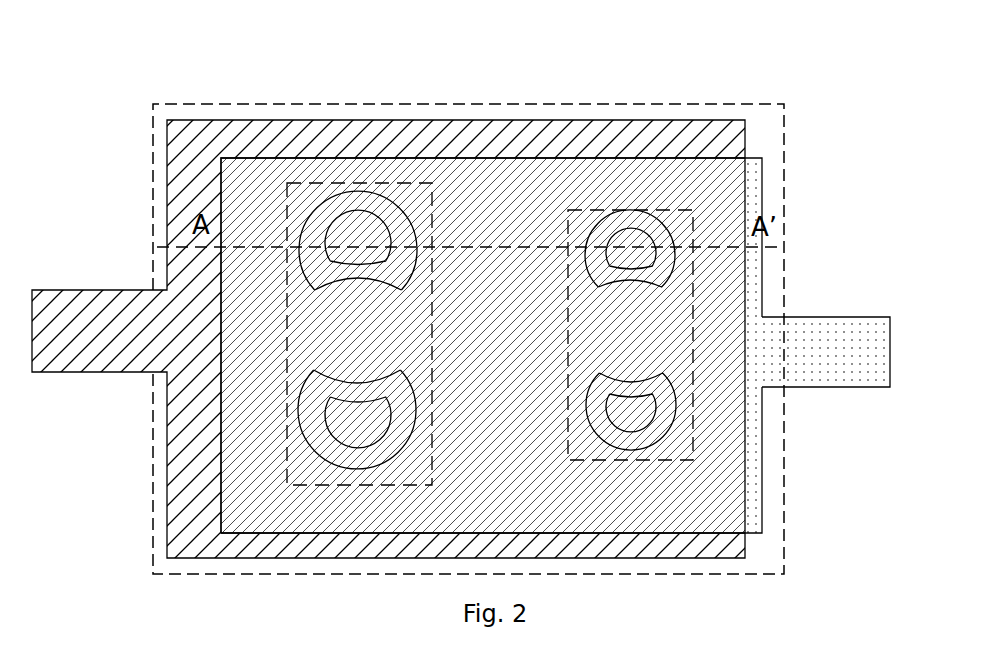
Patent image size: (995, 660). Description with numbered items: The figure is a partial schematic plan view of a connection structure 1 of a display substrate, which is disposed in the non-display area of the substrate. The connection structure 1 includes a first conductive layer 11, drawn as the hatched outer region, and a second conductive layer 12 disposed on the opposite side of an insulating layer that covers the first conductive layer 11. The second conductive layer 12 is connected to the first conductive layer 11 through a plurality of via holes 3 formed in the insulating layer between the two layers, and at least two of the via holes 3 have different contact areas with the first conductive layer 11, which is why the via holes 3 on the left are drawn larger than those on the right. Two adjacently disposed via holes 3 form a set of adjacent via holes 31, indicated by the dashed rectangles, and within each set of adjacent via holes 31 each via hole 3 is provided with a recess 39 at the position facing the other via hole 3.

The connection structure 1 is at (163, 108).
The first conductive layer 11 is at (230, 120).
The second conductive layer 12 is at (719, 160).
The via hole 3 is at (353, 192).
The set of adjacent via holes 31 is at (421, 183).
The recess 39 is at (314, 291).